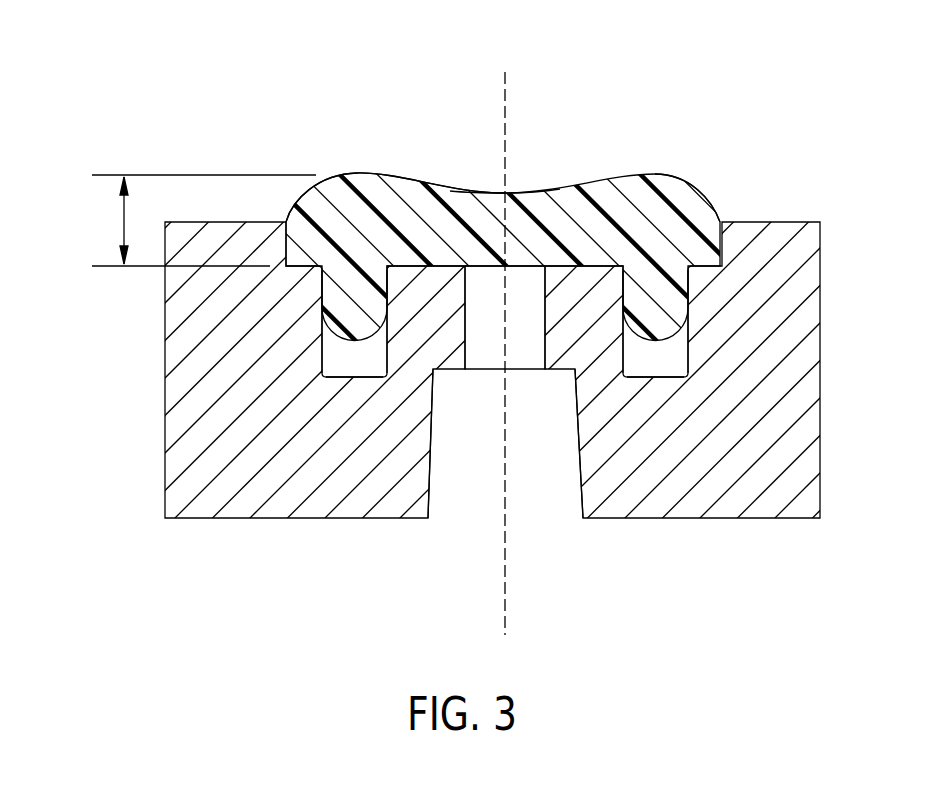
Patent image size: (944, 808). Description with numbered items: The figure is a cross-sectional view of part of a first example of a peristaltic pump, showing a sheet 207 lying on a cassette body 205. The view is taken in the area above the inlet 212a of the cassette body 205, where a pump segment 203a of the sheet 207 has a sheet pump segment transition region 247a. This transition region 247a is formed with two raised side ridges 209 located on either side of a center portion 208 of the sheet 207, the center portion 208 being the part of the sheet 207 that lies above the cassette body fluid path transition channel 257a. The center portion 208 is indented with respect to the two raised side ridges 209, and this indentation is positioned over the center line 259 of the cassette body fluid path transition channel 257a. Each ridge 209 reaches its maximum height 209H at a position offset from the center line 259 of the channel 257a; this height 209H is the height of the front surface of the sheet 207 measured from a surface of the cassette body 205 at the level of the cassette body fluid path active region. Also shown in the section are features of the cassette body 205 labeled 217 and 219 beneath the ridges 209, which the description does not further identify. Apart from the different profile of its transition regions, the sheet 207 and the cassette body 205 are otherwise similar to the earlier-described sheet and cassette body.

The sheet pump segment transition region 247a is at (359, 86).
The cassette body 205 is at (782, 233).
The raised side ridge 209 is at (347, 174).
The sheet 207 is at (398, 185).
The pump segment 203a is at (457, 193).
The center portion 208 is at (520, 193).
The cassette body fluid path transition channel 257a is at (522, 283).
The center line 259 is at (507, 90).
The groove side wall 217 is at (322, 308).
The groove bottom 219 is at (333, 363).
The inlet 212a is at (537, 512).
The maximum height 209H is at (122, 222).